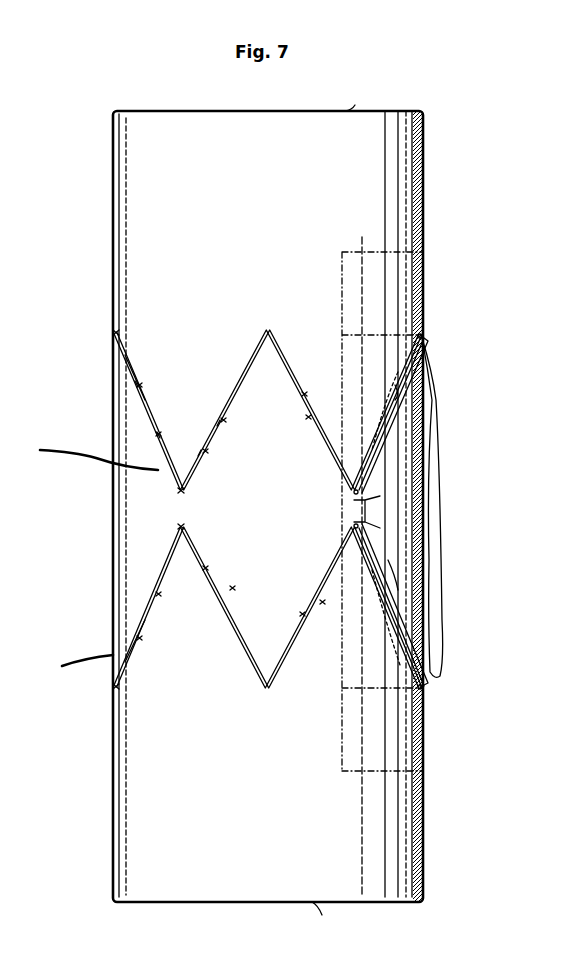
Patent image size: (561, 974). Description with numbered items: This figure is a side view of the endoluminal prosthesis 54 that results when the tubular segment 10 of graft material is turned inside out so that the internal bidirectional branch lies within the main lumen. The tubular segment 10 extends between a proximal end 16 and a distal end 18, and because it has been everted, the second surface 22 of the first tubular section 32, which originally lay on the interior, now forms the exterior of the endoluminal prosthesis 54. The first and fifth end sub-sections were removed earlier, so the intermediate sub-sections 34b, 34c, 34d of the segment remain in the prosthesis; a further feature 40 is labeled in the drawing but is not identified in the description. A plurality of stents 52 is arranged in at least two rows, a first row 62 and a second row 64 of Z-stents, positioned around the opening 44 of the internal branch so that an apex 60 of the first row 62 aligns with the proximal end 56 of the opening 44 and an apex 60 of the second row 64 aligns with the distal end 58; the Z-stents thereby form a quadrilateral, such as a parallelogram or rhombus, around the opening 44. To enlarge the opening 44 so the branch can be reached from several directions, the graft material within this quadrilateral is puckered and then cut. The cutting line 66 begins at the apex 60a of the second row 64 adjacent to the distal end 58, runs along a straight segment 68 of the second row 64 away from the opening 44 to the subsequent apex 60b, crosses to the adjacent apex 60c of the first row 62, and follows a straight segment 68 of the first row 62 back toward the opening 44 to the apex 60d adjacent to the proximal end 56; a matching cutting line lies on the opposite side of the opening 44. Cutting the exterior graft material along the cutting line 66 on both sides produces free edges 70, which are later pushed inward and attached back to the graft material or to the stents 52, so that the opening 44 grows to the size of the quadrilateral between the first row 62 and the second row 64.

The tubular segment 10 is at (128, 158).
The proximal end 16 is at (322, 915).
The distal end 18 is at (355, 105).
The second surface 22 is at (130, 192).
The first tubular section 32 is at (132, 816).
The section 34b is at (343, 771).
The section 34c is at (343, 660).
The section 34d is at (366, 278).
The sidewall 40 is at (424, 222).
The opening 44 is at (436, 455).
The plurality of stents 52 is at (84, 561).
The endoluminal prosthesis 54 is at (444, 147).
The proximal end of the opening 56 is at (420, 675).
The distal end of the opening 58 is at (428, 341).
The apex 60 is at (268, 328).
The apex of the second row of Z-stents 60a is at (422, 336).
The subsequent apex of the second row of Z-stents 60b is at (420, 482).
The adjacent apex of the first row of Z-stents 60c is at (428, 548).
The apex of the first row of Z-stents 60d is at (424, 688).
The first row of Z-stents 62 is at (135, 630).
The second row of Z-stents 64 is at (134, 378).
The cutting line 66 is at (366, 512).
The straight segment 68 is at (182, 468).
The free edges 70 is at (398, 395).